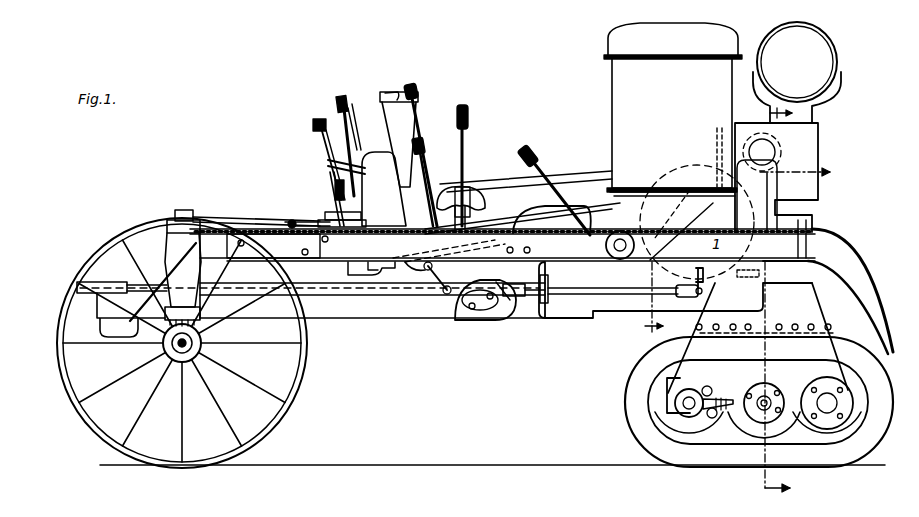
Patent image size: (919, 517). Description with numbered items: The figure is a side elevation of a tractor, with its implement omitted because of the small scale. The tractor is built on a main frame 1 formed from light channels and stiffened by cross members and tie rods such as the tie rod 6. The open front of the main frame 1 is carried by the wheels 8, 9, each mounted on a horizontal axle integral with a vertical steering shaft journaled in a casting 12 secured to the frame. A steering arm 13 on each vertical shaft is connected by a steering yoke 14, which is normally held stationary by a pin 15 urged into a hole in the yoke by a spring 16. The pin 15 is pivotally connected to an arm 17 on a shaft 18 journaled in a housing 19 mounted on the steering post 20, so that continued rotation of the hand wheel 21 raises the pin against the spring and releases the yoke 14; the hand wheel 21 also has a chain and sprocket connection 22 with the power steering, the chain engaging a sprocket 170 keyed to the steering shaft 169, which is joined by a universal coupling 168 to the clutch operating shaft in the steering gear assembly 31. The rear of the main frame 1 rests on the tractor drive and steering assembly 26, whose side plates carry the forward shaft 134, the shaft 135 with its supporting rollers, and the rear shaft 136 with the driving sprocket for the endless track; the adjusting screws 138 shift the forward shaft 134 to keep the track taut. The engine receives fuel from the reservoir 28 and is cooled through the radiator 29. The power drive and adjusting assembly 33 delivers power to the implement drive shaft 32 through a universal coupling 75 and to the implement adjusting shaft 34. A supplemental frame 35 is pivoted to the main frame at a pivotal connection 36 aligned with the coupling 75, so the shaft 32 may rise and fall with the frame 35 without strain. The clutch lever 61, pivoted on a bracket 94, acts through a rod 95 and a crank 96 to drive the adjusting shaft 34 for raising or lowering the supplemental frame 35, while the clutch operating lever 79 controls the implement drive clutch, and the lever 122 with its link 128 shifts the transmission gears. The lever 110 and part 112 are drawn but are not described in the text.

The main frame 1 is at (850, 291).
The tie rod 6 is at (718, 220).
The front wheel 8 is at (802, 330).
The front wheel 9 is at (308, 363).
The casting 12 is at (174, 241).
The steering arm 13 is at (252, 220).
The steering yoke 14 is at (314, 222).
The pin 15 is at (332, 172).
The spring 16 is at (342, 203).
The arm 17 is at (323, 137).
The shaft 18 is at (313, 126).
The housing 19 is at (338, 100).
The steering post 20 is at (330, 163).
The hand wheel 21 is at (388, 93).
The chain and sprocket connection 22 is at (385, 205).
The tractor drive and steering assembly 26 is at (650, 357).
The fuel reservoir 28 is at (820, 62).
The radiator 29 is at (612, 76).
The steering gear assembly 31 is at (820, 205).
The implement drive shaft 32 is at (93, 280).
The power drive and adjusting assembly 33 is at (573, 320).
The implement adjusting shaft 34 is at (617, 256).
The supplemental frame 35 is at (415, 317).
The pivotal connection 36 is at (509, 300).
The clutch lever 61 is at (428, 147).
The universal coupling 75 is at (462, 318).
The clutch operating lever 79 is at (540, 158).
The bracket 94 is at (428, 278).
The link or rod 95 is at (633, 296).
The crank or arm 96 is at (706, 284).
The lever 110 is at (418, 88).
The rail 112 is at (486, 182).
The gear shift lever 122 is at (470, 116).
The link 128 is at (470, 196).
The forward shaft 134 is at (668, 415).
The shaft 135 is at (763, 412).
The rear shaft 136 is at (840, 408).
The adjusting screw 138 is at (722, 409).
The universal coupling 168 is at (707, 207).
The steering shaft 169 is at (613, 208).
The sprocket 170 is at (374, 277).